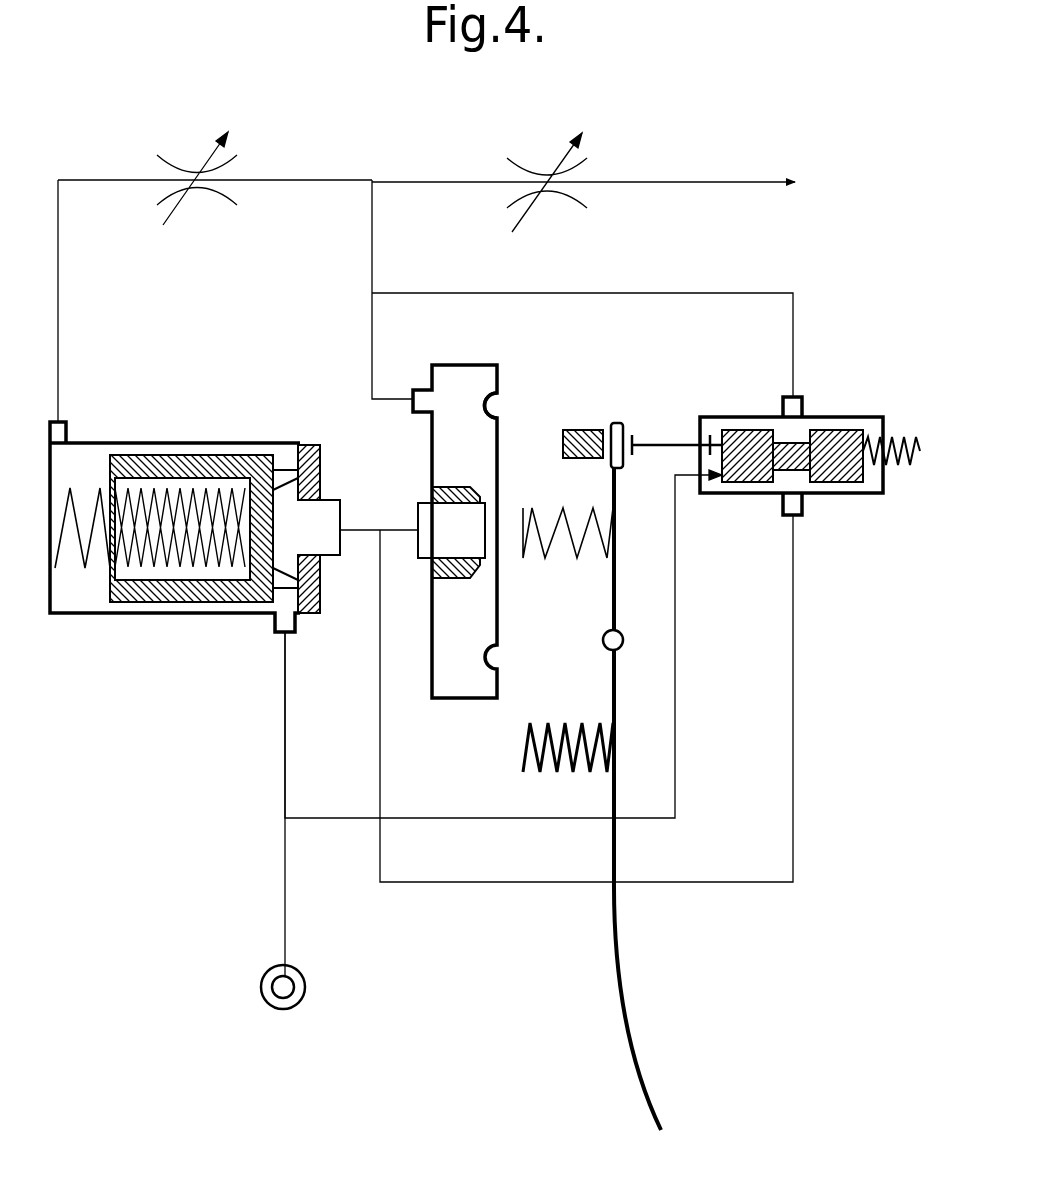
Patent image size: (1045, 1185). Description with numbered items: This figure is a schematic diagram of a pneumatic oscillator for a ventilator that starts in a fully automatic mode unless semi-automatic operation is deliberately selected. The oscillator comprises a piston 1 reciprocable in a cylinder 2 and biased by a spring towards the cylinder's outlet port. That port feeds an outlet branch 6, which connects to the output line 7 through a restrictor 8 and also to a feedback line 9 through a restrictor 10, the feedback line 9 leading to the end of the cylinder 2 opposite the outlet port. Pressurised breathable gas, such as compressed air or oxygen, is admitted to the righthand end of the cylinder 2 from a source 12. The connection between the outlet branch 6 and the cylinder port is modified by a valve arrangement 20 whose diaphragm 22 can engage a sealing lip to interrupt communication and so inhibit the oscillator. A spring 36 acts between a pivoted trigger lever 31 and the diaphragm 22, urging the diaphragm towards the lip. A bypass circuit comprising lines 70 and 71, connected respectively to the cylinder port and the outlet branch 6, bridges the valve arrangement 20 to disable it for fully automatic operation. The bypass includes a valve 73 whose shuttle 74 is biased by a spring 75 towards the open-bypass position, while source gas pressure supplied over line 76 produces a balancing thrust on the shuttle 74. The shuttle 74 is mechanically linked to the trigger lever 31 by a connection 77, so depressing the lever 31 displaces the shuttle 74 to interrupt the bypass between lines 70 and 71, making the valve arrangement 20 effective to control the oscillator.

The piston 1 is at (143, 590).
The cylinder 2 is at (147, 443).
The outlet branch 6 is at (372, 242).
The output line 7 is at (703, 183).
The restrictor 8 is at (525, 165).
The feedback line 9 is at (60, 287).
The restrictor 10 is at (165, 157).
The source 12 is at (265, 980).
The valve arrangement 20 is at (462, 365).
The diaphragm 22 is at (495, 408).
The trigger lever 31 is at (627, 1020).
The spring 36 is at (557, 553).
The bypass line 70 is at (800, 745).
The bypass line 71 is at (692, 293).
The valve 73 is at (827, 395).
The shuttle 74 is at (830, 470).
The spring 75 is at (901, 435).
The line 76 is at (680, 692).
The connection 77 is at (665, 440).